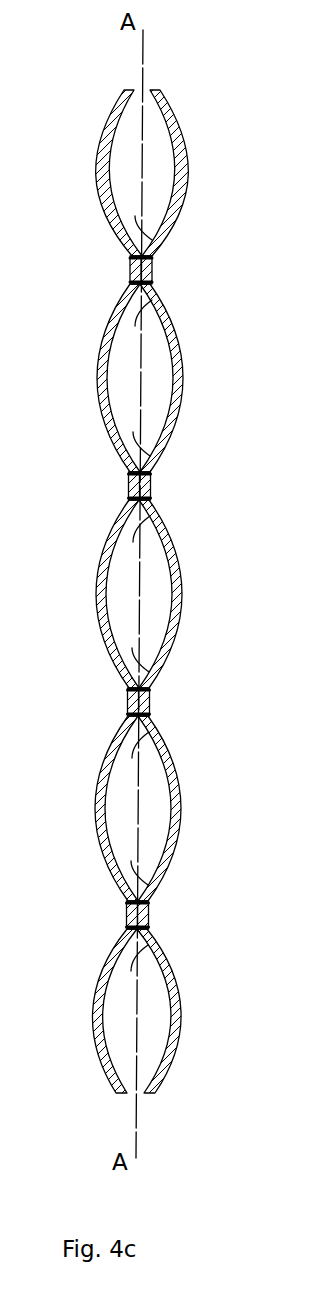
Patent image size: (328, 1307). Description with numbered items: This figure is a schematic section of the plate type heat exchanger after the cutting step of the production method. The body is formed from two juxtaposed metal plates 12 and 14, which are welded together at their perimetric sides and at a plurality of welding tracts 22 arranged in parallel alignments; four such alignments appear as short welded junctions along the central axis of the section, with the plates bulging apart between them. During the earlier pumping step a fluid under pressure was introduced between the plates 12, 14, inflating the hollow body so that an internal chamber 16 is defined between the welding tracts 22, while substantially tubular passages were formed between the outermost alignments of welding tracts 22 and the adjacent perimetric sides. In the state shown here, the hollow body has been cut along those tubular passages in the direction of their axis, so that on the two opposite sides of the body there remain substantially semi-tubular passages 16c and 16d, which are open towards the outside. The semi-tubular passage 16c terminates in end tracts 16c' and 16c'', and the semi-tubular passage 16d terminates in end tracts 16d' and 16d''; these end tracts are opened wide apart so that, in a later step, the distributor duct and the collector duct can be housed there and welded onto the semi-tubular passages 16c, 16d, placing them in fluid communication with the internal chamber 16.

The metal plate 12 is at (185, 377).
The metal plate 14 is at (103, 333).
The internal chamber 16 is at (122, 599).
The semi-tubular passage 16c is at (116, 1045).
The end tract 16c' is at (91, 1045).
The end tract 16c'' is at (183, 1042).
The semi-tubular passage 16d is at (124, 142).
The end tract 16d' is at (98, 143).
The end tract 16d'' is at (191, 142).
The welding tract 22 is at (152, 257).